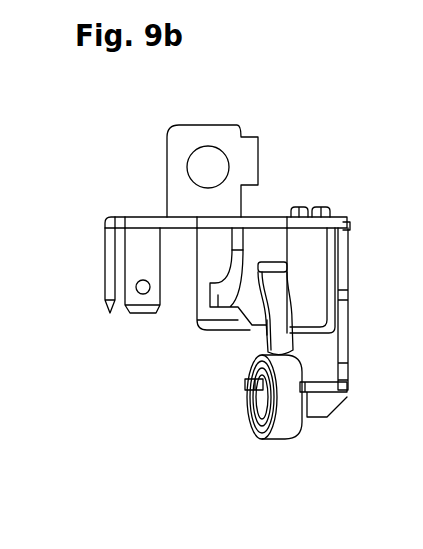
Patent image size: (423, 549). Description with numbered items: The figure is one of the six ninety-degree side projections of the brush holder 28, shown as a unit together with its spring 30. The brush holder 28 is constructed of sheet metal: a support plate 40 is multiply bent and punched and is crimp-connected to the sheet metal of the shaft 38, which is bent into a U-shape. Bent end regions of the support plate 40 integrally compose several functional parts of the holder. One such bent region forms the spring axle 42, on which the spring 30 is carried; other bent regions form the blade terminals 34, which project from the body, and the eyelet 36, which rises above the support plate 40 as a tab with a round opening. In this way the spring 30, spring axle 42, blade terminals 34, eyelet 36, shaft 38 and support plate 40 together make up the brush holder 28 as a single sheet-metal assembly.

The brush holder 28 is at (143, 170).
The spring 30 is at (278, 430).
The blade terminals 34 is at (134, 267).
The eyelet 36 is at (205, 133).
The shaft 38 is at (218, 326).
The support plate 40 is at (343, 268).
The spring axle 42 is at (246, 386).